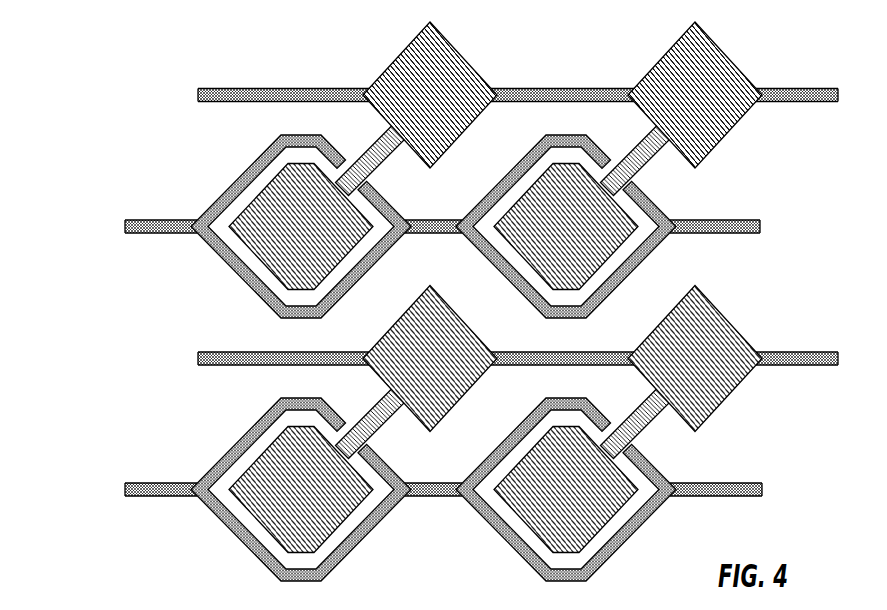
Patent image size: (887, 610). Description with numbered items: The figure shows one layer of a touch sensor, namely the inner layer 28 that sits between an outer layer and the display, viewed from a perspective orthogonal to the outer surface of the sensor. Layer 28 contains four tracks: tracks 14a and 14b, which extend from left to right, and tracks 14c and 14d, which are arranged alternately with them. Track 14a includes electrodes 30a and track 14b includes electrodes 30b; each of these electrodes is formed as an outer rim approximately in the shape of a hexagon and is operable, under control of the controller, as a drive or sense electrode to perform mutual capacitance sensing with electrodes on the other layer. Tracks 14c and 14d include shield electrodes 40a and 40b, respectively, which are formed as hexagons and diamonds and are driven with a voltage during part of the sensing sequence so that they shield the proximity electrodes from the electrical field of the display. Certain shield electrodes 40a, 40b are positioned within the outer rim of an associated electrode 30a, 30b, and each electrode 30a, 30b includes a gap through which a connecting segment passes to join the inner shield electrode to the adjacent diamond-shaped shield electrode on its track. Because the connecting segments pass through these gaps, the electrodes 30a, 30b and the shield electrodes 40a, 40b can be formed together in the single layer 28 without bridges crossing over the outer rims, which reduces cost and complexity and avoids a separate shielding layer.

The track 14a is at (105, 228).
The track 14b is at (105, 491).
The track 14c is at (105, 97).
The track 14d is at (105, 358).
The electrode 30a is at (225, 185).
The electrode 30b is at (222, 450).
The shield electrode 40a is at (440, 82).
The shield electrode 40b is at (440, 343).
The layer 28 is at (444, 301).